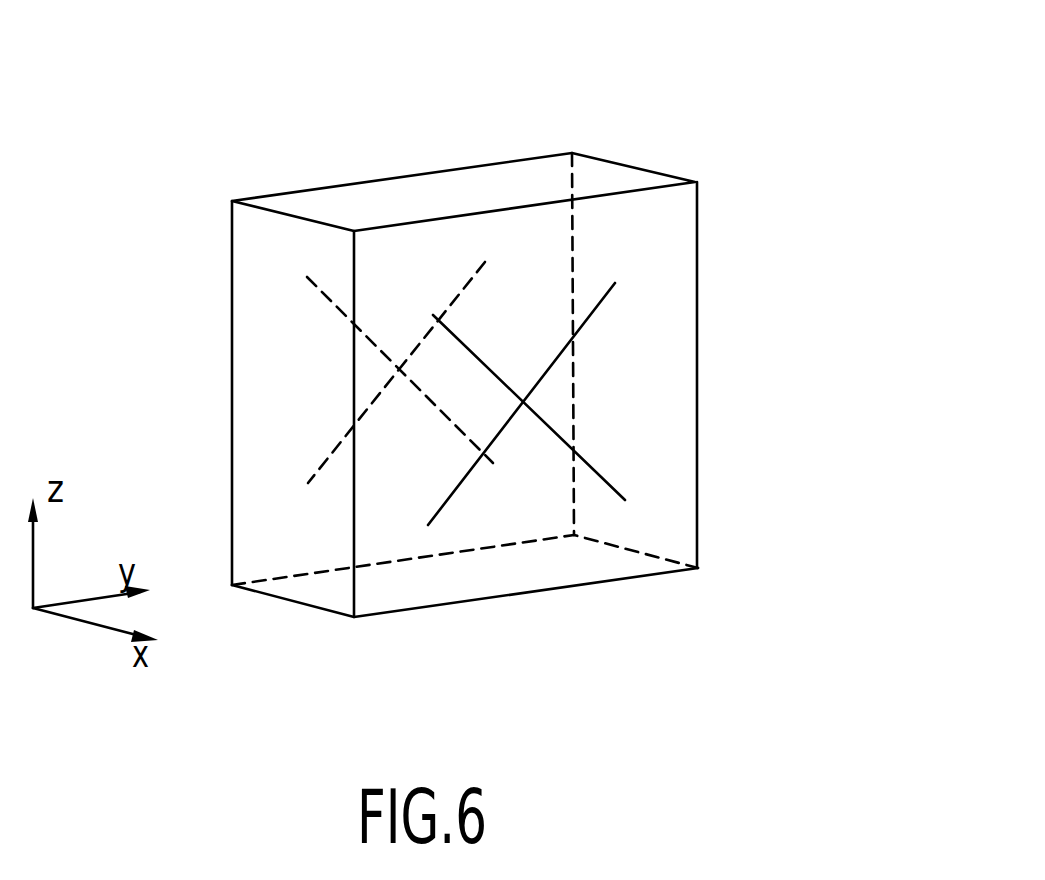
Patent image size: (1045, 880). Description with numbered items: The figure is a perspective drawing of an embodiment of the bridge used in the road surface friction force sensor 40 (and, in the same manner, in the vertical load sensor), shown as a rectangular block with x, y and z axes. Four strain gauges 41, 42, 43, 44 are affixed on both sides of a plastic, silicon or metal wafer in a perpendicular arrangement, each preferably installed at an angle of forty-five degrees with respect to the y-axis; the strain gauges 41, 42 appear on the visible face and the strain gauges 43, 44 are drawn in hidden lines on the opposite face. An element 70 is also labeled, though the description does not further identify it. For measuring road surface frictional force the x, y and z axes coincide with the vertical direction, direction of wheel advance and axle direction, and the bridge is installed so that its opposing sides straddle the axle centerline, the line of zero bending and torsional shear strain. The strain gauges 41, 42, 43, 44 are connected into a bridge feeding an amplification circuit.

The road surface friction force sensor 40 is at (633, 124).
The side face of optical element 70 is at (695, 225).
The strain gauge 41 is at (600, 307).
The strain gauge 42 is at (605, 480).
The strain gauge 43 is at (485, 262).
The strain gauge 44 is at (307, 277).